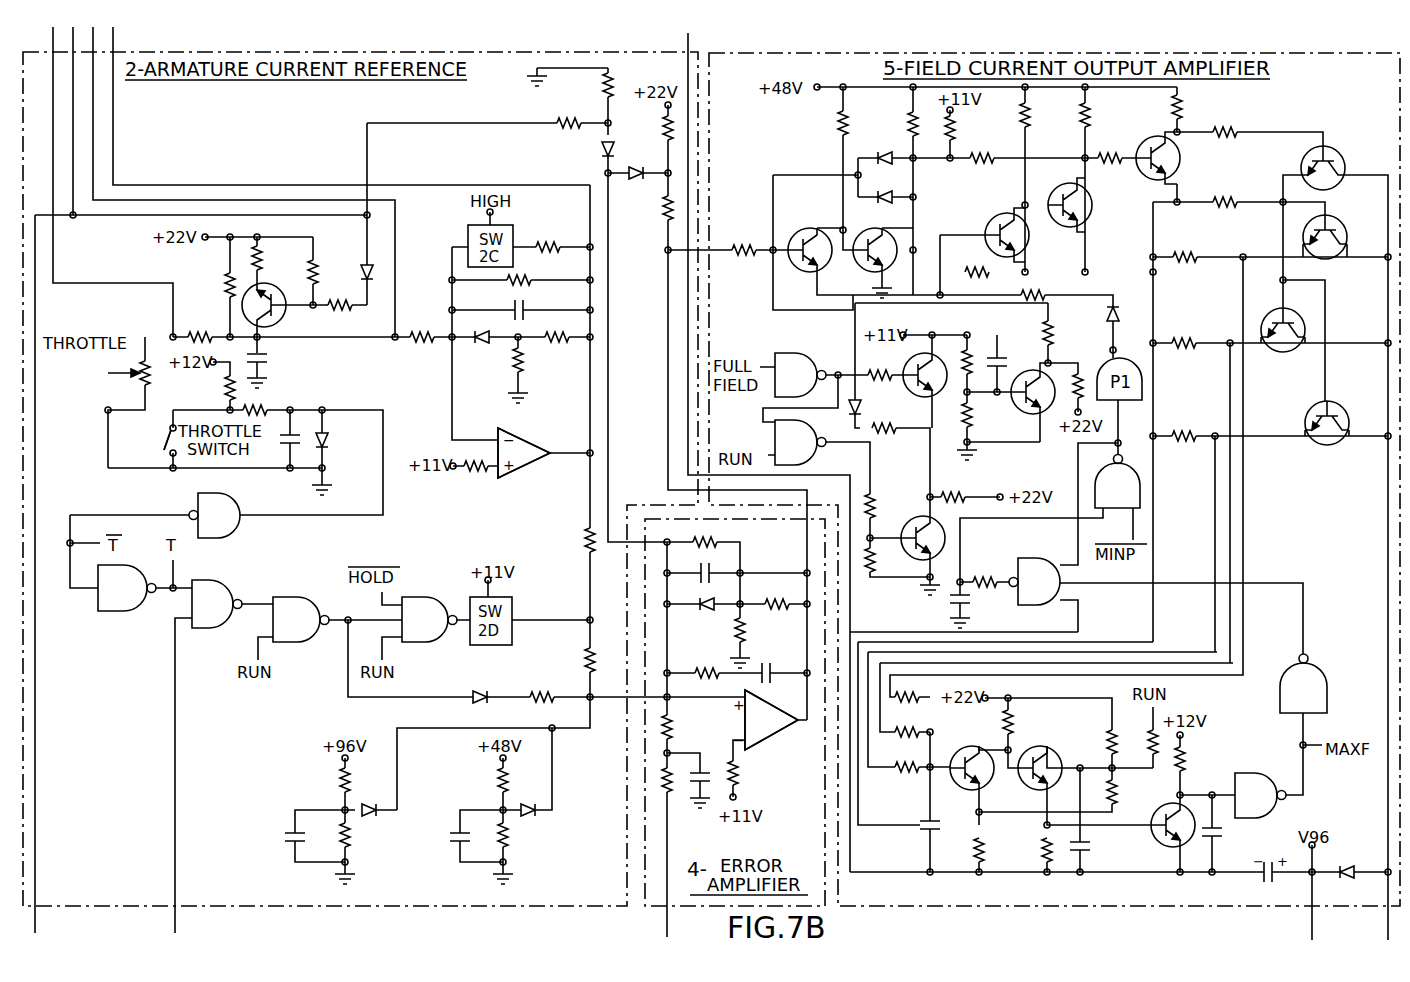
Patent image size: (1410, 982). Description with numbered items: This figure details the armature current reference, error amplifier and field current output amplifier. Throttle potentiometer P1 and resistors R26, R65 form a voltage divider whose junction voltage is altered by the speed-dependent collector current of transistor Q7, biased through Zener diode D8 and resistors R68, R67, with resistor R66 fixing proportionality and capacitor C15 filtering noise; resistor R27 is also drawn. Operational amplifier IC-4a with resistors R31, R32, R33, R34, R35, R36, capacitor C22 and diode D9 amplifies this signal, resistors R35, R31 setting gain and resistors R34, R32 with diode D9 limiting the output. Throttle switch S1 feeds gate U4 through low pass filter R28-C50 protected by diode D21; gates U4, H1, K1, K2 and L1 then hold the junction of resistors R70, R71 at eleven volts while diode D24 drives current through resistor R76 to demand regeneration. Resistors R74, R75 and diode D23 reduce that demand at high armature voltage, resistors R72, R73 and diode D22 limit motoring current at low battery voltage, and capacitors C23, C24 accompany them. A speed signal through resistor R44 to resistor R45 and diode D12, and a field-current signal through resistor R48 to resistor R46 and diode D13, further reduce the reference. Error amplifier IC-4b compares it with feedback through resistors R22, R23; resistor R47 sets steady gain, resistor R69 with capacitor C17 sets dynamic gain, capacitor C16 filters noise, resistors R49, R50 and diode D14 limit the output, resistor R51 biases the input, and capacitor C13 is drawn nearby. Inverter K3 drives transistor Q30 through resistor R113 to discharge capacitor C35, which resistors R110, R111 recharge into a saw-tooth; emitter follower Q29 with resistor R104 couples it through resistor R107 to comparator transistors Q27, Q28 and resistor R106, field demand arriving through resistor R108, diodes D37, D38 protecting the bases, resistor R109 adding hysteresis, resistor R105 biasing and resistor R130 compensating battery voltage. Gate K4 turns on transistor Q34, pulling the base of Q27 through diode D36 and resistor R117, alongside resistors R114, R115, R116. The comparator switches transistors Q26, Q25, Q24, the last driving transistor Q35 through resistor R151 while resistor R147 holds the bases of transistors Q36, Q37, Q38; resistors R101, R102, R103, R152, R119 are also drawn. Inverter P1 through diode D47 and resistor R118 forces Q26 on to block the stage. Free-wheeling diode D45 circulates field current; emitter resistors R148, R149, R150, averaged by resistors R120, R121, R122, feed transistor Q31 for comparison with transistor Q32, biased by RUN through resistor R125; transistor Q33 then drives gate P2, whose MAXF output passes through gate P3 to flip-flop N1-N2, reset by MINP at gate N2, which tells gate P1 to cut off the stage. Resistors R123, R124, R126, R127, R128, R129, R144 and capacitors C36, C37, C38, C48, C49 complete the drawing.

The resistor R26 is at (196, 322).
The resistor R31 is at (416, 325).
The diode D9 is at (473, 327).
The resistor R34 is at (548, 352).
The resistor R32 is at (495, 375).
The resistor R65 is at (210, 275).
The resistor R66 is at (273, 258).
The resistor R67 is at (330, 254).
The Zener diode D8 is at (347, 275).
The resistor R68 is at (348, 317).
The transistor Q7 is at (279, 310).
The capacitor C15 is at (283, 366).
The resistor R44 is at (545, 117).
The throttle potentiometer P1 is at (126, 367).
The resistor R27 is at (201, 388).
The resistor R28 is at (276, 397).
The throttle switch S1 is at (154, 434).
The capacitor C50 is at (266, 454).
The diode D21 is at (340, 457).
The gate U4 is at (214, 515).
The NAND gate H1 is at (127, 588).
The NAND gate K1 is at (217, 604).
The NAND gate K2 is at (301, 619).
The NAND gate L1 is at (429, 619).
The operational amplifier IC-4a is at (527, 443).
The resistor R33 is at (462, 485).
The resistor R36 is at (541, 234).
The resistor R35 is at (538, 273).
The capacitor C22 is at (545, 304).
The resistor R70 is at (566, 533).
The resistor R71 is at (572, 659).
The diode D24 is at (458, 687).
The resistor R76 is at (528, 687).
The resistor R74 is at (318, 780).
The resistor R75 is at (363, 853).
The diode D23 is at (369, 795).
The capacitor C23 is at (266, 836).
The resistor R72 is at (477, 780).
The resistor R73 is at (523, 853).
The diode D22 is at (532, 797).
The capacitor C24 is at (439, 828).
The resistor R45 is at (570, 82).
The diode D12 is at (584, 145).
The diode D13 is at (639, 157).
The resistor R46 is at (649, 123).
The resistor R48 is at (643, 204).
The resistor R108 is at (737, 234).
The transistor Q28 is at (809, 235).
The transistor Q27 is at (875, 254).
The resistor R106 is at (815, 122).
The resistor R130 is at (887, 115).
The diode D38 is at (877, 143).
The diode D37 is at (885, 188).
The resistor R105 is at (975, 123).
The resistor R109 is at (960, 172).
The resistor R101 is at (1112, 147).
The resistor R103 is at (1047, 110).
The resistor R102 is at (1108, 111).
The transistor Q24 is at (1148, 148).
The transistor Q25 is at (1060, 197).
The transistor Q26 is at (998, 224).
The resistor R152 is at (1201, 101).
The resistor R151 is at (1246, 122).
The resistor R147 is at (1239, 190).
The resistor R148 is at (1205, 247).
The resistor R149 is at (1199, 328).
The resistor R150 is at (1189, 421).
The output transistor Q35 is at (1339, 162).
The output transistor Q36 is at (1337, 234).
The output transistor Q37 is at (1276, 348).
The output transistor Q38 is at (1306, 418).
The resistor R119 is at (967, 259).
The resistor R118 is at (1012, 291).
The diode D47 is at (1122, 300).
The inverting gate K3 is at (800, 375).
The NAND gate K4 is at (800, 442).
The resistor R113 is at (880, 363).
The diode D36 is at (873, 397).
The resistor R117 is at (894, 443).
The transistor Q30 is at (916, 385).
The resistor R110 is at (946, 342).
The resistor R111 is at (949, 431).
The capacitor C35 is at (1010, 339).
The transistor Q29 is at (1016, 404).
The resistor R107 is at (1071, 323).
The resistor R104 is at (1080, 365).
The gate N2 is at (1117, 482).
The resistor R116 is at (968, 486).
The resistor R114 is at (893, 494).
The transistor Q34 is at (916, 543).
The resistor R115 is at (879, 581).
The resistor R144 is at (989, 568).
The capacitor C48 is at (980, 613).
The gate N1 is at (1034, 581).
The resistor R120 is at (895, 707).
The resistor R121 is at (892, 742).
The resistor R122 is at (886, 780).
The capacitor C36 is at (904, 819).
The transistor Q31 is at (967, 758).
The transistor Q32 is at (1040, 761).
The resistor R123 is at (1031, 717).
The resistor R124 is at (1087, 730).
The resistor R125 is at (1135, 730).
The resistor R126 is at (1136, 789).
The resistor R128 is at (962, 845).
The resistor R127 is at (1055, 856).
The capacitor C37 is at (1095, 858).
The transistor Q33 is at (1161, 837).
The resistor R129 is at (1205, 752).
The capacitor C38 is at (1238, 835).
The inverting gate P2 is at (1260, 795).
The inverting gate P3 is at (1303, 683).
The capacitor C49 is at (1248, 885).
The free-wheeling diode D45 is at (1334, 888).
The resistor R47 is at (722, 536).
The capacitor C16 is at (689, 566).
The diode D14 is at (693, 618).
The resistor R49 is at (766, 595).
The resistor R50 is at (760, 642).
The resistor R69 is at (697, 660).
The capacitor C17 is at (775, 662).
The resistor R23 is at (686, 721).
The resistor R22 is at (683, 802).
The capacitor C13 is at (700, 772).
The resistor R51 is at (757, 772).
The operational amplifier IC-4b is at (781, 723).